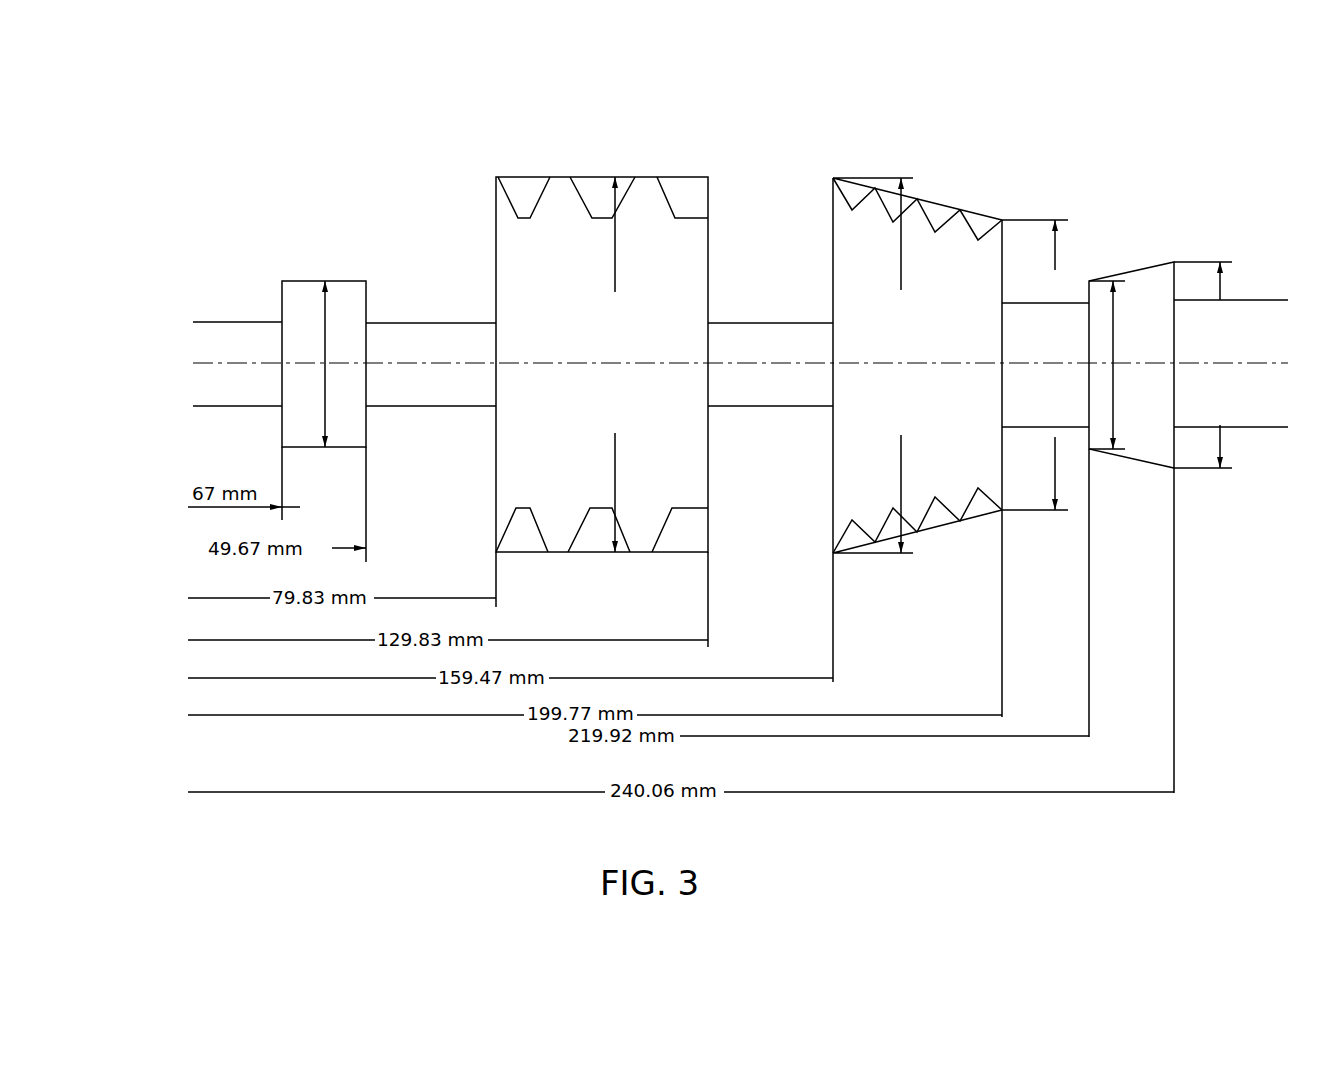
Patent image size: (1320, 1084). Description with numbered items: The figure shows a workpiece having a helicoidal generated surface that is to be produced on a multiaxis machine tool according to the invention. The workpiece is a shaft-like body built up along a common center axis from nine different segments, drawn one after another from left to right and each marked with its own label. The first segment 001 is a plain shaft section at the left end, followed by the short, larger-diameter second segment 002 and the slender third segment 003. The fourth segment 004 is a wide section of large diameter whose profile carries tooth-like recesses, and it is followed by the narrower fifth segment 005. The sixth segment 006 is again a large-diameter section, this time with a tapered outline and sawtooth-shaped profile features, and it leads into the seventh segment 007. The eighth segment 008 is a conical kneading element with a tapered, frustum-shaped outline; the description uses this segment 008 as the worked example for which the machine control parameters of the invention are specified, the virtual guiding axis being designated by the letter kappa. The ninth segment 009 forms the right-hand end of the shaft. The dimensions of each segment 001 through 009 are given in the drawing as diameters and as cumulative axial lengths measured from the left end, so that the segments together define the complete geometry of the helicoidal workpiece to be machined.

The segment 001 is at (225, 351).
The segment 002 is at (324, 407).
The segment 003 is at (431, 351).
The segment 004 is at (602, 399).
The segment 005 is at (770, 351).
The segment 006 is at (917, 446).
The segment 007 is at (1045, 365).
The conical kneading element 008 is at (1160, 514).
The segment 009 is at (1231, 365).